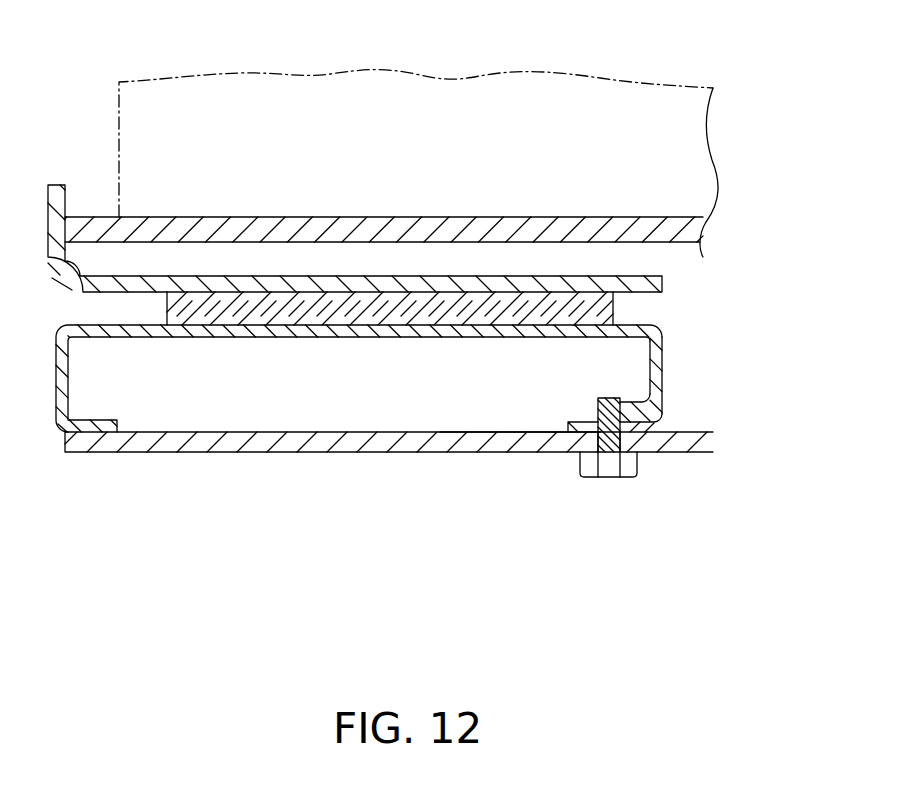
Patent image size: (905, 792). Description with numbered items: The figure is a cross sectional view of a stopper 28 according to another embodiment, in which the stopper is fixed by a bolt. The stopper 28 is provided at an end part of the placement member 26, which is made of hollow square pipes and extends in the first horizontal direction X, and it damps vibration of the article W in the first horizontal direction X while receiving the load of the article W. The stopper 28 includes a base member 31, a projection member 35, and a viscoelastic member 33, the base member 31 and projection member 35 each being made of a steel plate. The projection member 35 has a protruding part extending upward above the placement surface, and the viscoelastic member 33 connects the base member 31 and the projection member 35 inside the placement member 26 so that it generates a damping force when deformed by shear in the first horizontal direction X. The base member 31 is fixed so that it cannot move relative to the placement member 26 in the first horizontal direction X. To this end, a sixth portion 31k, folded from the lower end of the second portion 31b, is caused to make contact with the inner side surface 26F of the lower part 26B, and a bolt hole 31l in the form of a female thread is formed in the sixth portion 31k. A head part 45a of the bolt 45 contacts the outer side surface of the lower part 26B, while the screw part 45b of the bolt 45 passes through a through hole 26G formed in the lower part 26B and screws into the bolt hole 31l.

The article W is at (473, 78).
The first horizontal direction X is at (368, 117).
The placement member 26 is at (445, 208).
The stopper 28 is at (220, 271).
The viscoelastic member 33 is at (315, 303).
The projection member 35 is at (505, 271).
The base member 31 is at (313, 369).
The second portion 31b is at (658, 372).
The bolt hole 31l is at (597, 401).
The sixth portion 31k is at (582, 420).
The lower part 26B is at (404, 447).
The inner side surface 26F is at (453, 431).
The through hole 26G is at (607, 452).
The bolt 45 is at (637, 482).
The head part 45a is at (587, 467).
The screw part 45b is at (665, 428).